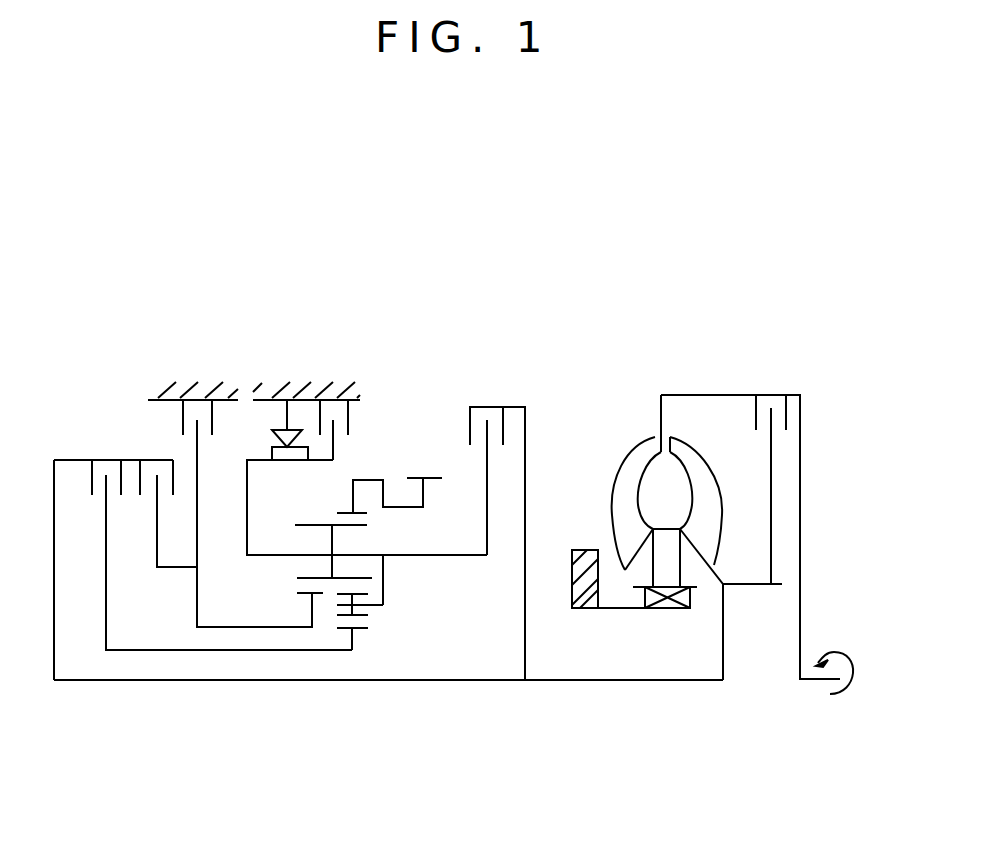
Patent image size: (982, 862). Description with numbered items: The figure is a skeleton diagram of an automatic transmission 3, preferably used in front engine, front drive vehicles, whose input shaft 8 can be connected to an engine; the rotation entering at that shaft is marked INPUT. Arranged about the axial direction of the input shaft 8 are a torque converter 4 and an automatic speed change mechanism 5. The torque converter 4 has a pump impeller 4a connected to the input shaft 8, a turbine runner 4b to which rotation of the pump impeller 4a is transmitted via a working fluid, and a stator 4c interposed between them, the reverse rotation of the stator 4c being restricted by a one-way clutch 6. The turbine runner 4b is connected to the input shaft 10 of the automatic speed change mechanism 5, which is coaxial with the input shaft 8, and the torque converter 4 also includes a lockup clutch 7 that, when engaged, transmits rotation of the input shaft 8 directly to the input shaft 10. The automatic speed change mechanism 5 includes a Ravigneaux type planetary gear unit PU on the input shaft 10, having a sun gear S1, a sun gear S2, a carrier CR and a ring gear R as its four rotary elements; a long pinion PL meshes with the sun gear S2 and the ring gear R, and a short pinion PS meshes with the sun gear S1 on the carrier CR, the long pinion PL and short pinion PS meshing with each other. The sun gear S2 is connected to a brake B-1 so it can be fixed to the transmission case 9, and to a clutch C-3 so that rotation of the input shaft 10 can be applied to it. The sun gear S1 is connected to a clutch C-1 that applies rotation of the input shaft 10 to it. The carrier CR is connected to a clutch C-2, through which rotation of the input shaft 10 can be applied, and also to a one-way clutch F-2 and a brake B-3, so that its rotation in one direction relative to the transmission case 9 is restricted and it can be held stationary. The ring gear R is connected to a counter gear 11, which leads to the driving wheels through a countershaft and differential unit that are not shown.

The automatic transmission 3 is at (396, 295).
The torque converter 4 is at (668, 508).
The pump impeller 4a is at (612, 502).
The turbine runner 4b is at (720, 483).
The stator 4c is at (672, 565).
The automatic speed change mechanism 5 is at (465, 360).
The one-way clutch 6 is at (665, 603).
The lockup clutch 7 is at (775, 395).
The input shaft 8 is at (803, 537).
The transmission case 9 is at (155, 384).
The input shaft 10 is at (583, 681).
The counter gear 11 is at (437, 480).
The planetary gear unit PU is at (373, 454).
The long pinion PL is at (302, 525).
The ring gear R is at (352, 513).
The carrier CR is at (397, 567).
The short pinion PS is at (363, 616).
The sun gear S1 is at (362, 630).
The sun gear S2 is at (307, 593).
The clutch C-1 is at (82, 464).
The clutch C-2 is at (497, 530).
The clutch C-3 is at (149, 464).
The brake B-1 is at (198, 393).
The brake B-3 is at (332, 393).
The one-way clutch F-2 is at (280, 405).
The input INPUT is at (805, 690).